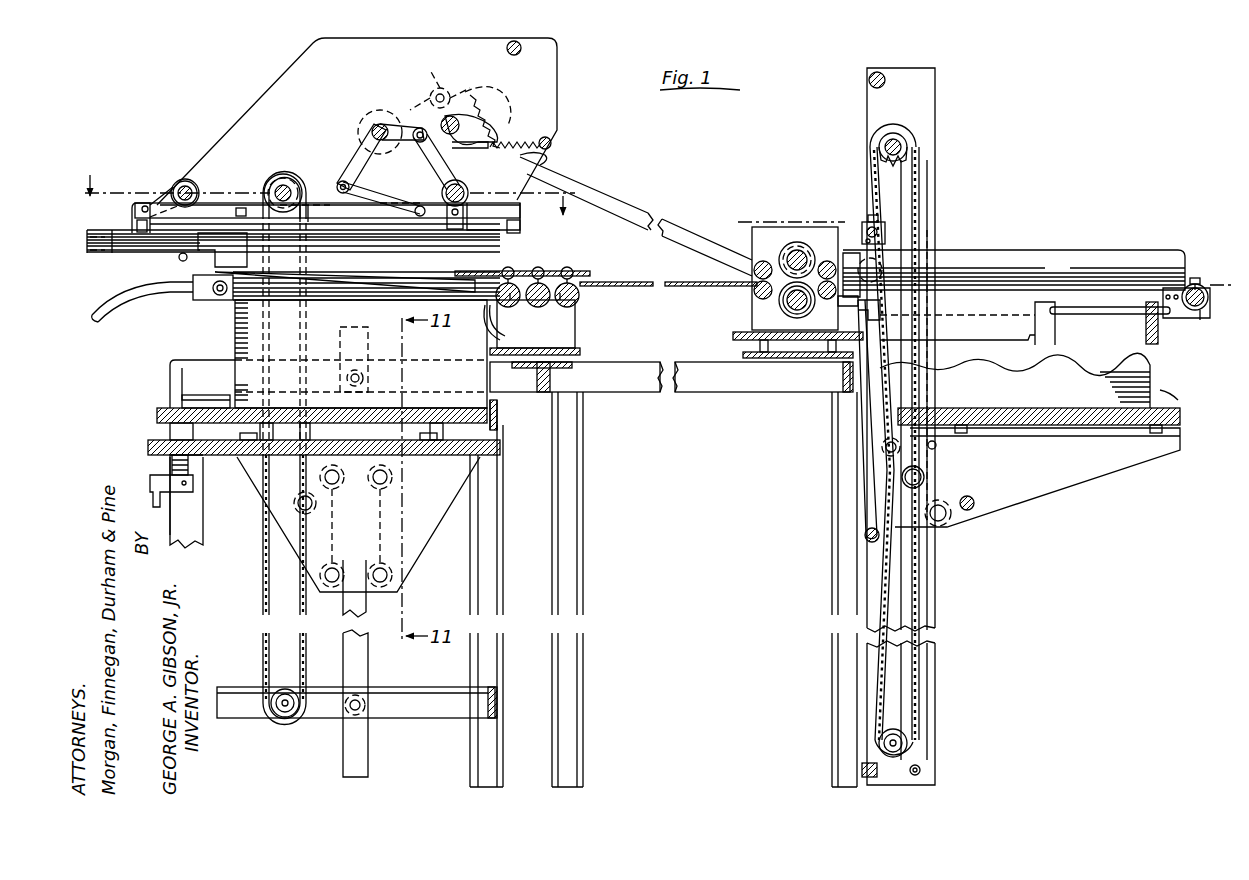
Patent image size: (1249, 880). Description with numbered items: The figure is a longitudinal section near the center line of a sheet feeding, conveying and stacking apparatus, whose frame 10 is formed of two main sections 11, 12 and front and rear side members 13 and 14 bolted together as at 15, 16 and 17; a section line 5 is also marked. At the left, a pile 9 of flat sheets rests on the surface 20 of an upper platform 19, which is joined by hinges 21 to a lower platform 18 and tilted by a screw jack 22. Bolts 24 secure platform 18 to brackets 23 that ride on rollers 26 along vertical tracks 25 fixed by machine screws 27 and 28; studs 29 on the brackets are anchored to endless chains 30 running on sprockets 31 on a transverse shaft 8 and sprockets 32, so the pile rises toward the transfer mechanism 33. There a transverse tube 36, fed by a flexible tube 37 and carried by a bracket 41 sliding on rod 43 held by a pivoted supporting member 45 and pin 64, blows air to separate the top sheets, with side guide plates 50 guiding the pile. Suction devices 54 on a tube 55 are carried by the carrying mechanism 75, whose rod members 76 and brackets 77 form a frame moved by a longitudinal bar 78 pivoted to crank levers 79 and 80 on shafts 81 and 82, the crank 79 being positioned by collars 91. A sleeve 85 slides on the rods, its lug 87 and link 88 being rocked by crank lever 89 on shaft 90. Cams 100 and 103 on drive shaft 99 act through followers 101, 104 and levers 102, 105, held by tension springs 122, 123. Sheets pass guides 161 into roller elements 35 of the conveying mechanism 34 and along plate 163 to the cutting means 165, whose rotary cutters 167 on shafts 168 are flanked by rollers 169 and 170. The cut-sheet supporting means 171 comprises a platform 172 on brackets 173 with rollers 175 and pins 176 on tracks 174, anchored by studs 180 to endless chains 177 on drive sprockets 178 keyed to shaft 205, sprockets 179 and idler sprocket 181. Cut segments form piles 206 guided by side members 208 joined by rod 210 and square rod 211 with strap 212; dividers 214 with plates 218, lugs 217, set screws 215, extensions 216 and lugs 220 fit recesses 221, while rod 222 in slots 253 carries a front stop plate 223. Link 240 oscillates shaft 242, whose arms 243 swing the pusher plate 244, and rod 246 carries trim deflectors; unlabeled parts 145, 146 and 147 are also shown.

The section line 5 is at (323, 200).
The transverse shaft 8 is at (284, 177).
The pile of flat sheets 9 is at (370, 276).
The frame 10 is at (162, 365).
The main frame section 11 is at (170, 383).
The main frame section 12 is at (580, 425).
The front side member 13 is at (283, 80).
The rear side member 14 is at (932, 85).
The bolt 15 is at (543, 393).
The bolt 16 is at (744, 218).
The bolt 17 is at (192, 360).
The lower platform 18 is at (148, 447).
The upper platform 19 is at (175, 415).
The surface 20 is at (182, 400).
The hinge 21 is at (494, 438).
The screw jack 22 is at (172, 480).
The bracket 23 is at (418, 515).
The bolt 24 is at (244, 434).
The vertical track 25 is at (355, 332).
The roller 26 is at (353, 526).
The machine screw 27 is at (352, 712).
The machine screw 28 is at (362, 374).
The stud 29 is at (299, 496).
The endless chain 30 is at (272, 182).
The sprocket 31 is at (277, 183).
The sprocket 32 is at (283, 690).
The transfer mechanism 33 is at (228, 208).
The conveying mechanism 34 is at (645, 262).
The roller element 35 is at (525, 308).
The transverse tube 36 is at (215, 298).
The flexible tube 37 is at (131, 309).
The bracket 41 is at (200, 262).
The rod 43 is at (130, 252).
The supporting member 45 is at (117, 242).
The side guide plate 50 is at (300, 285).
The suction device 54 is at (300, 265).
The tube 55 is at (244, 208).
The pin 64 is at (178, 258).
The carrying mechanism 75 is at (128, 207).
The rod member 76 is at (490, 270).
The bracket 77 is at (133, 227).
The longitudinal bar 78 is at (313, 205).
The crank lever 79 is at (162, 195).
The crank lever 80 is at (440, 190).
The stationary shaft 81 is at (183, 185).
The oscillatory shaft 82 is at (464, 190).
The sleeve member 85 is at (303, 226).
The lug 87 is at (450, 230).
The link 88 is at (400, 190).
The crank lever 89 is at (355, 160).
The shaft 90 is at (375, 128).
The collar 91 is at (192, 186).
The drive shaft 99 is at (445, 122).
The cam 100 is at (478, 160).
The cam follower 101 is at (402, 142).
The lever 102 is at (432, 163).
The cam 103 is at (498, 92).
The cam follower 104 is at (440, 77).
The lever 105 is at (381, 110).
The tension spring 122 is at (548, 157).
The tension spring 123 is at (500, 130).
The housing 145 is at (498, 305).
The bracket 146 is at (492, 340).
The table 147 is at (1043, 250).
The guide 161 is at (535, 265).
The plate 163 is at (633, 287).
The cutting means 165 is at (797, 200).
The rotary cutter 167 is at (775, 258).
The shaft 168 is at (795, 305).
The roller 169 is at (757, 285).
The roller 170 is at (805, 260).
The cut-sheet supporting means 171 is at (1073, 490).
The platform 172 is at (1065, 408).
The bracket 173 is at (1030, 485).
The track 174 is at (925, 600).
The roller 175 is at (950, 520).
The pin 176 is at (937, 448).
The endless chain 177 is at (922, 182).
The drive sprocket 178 is at (912, 158).
The sprocket 179 is at (905, 732).
The stud 180 is at (925, 478).
The idler sprocket 181 is at (918, 237).
The shaft 205 is at (905, 145).
The pile of cut segments 206 is at (1150, 390).
The side member 208 is at (1188, 318).
The rod 210 is at (1206, 298).
The square rod 211 is at (838, 304).
The strap 212 is at (862, 308).
The divider 214 is at (1045, 325).
The set screw 215 is at (1195, 278).
The extension 216 is at (868, 290).
The lug 217 is at (1196, 310).
The plate 218 is at (978, 330).
The lug 220 is at (1032, 345).
The recess 221 is at (1028, 408).
The rod 222 is at (1155, 330).
The front stop plate 223 is at (1160, 345).
The link 240 is at (636, 207).
The transverse shaft 242 is at (865, 536).
The arm 243 is at (868, 480).
The pusher plate 244 is at (842, 372).
The rod 246 is at (862, 232).
The slot 253 is at (1108, 315).